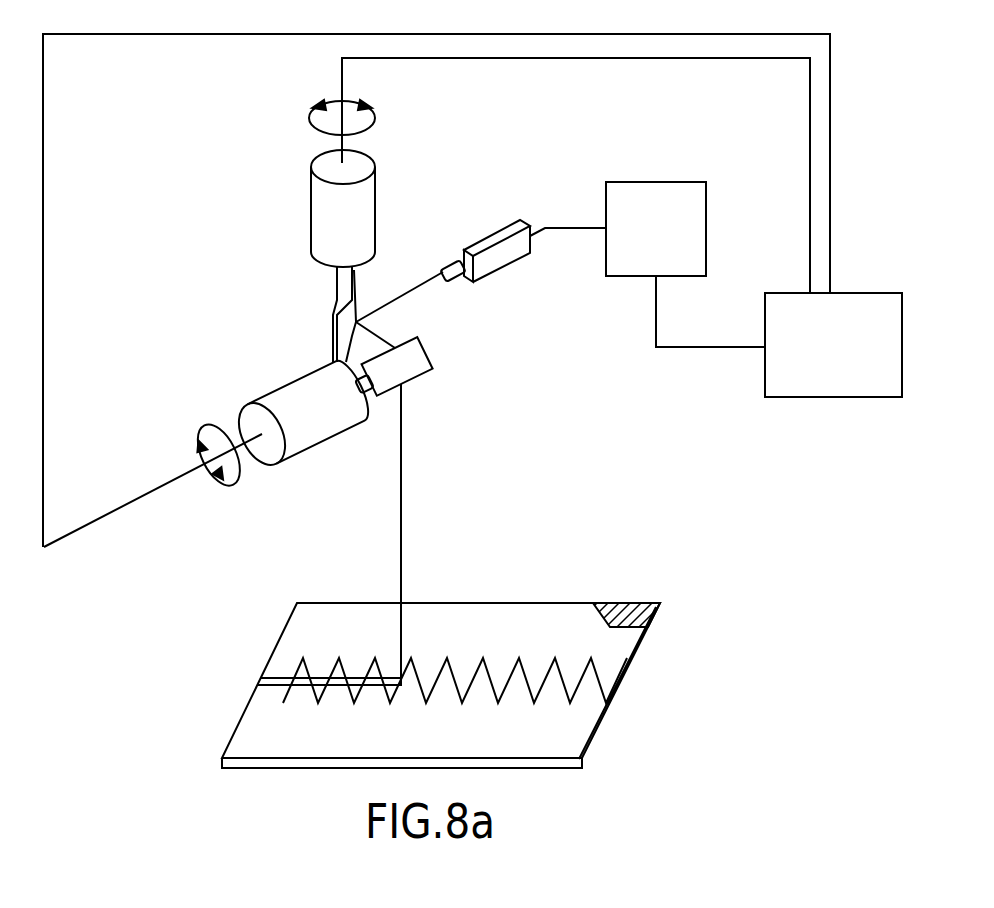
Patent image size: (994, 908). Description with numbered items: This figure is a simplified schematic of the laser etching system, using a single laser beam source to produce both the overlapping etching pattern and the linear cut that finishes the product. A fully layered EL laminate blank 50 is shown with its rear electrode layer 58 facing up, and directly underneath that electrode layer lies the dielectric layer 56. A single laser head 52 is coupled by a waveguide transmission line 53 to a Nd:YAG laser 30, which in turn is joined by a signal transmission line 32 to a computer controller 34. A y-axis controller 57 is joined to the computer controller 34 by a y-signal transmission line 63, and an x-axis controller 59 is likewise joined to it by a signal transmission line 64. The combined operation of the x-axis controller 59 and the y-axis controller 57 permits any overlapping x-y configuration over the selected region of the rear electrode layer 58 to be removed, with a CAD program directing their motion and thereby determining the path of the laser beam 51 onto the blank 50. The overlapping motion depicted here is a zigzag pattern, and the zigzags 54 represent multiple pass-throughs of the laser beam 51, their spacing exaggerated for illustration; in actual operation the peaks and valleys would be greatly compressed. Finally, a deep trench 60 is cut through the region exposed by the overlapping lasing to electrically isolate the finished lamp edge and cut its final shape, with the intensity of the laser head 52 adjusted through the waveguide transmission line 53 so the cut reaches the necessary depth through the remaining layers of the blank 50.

The Nd:YAG laser 30 is at (647, 181).
The signal transmission line 32 is at (655, 318).
The computer controller 34 is at (812, 398).
The EL laminate blank 50 is at (216, 711).
The laser beam 51 is at (402, 496).
The laser head 52 is at (455, 279).
The waveguide transmission line 53 is at (567, 227).
The zigzags 54 is at (473, 700).
The dielectric layer 56 is at (640, 603).
The rear electrode layer 58 is at (575, 610).
The y-axis controller 57 is at (288, 392).
The x-axis controller 59 is at (311, 224).
The deep trench 60 is at (262, 678).
The y-signal transmission line 63 is at (300, 33).
The signal transmission line 64 is at (342, 83).